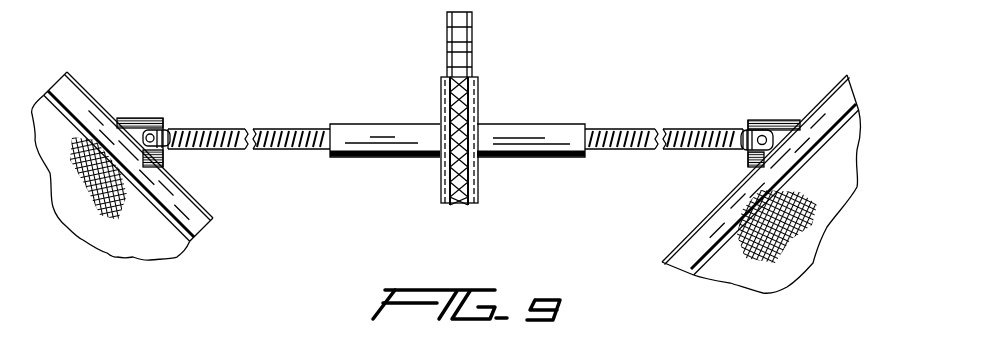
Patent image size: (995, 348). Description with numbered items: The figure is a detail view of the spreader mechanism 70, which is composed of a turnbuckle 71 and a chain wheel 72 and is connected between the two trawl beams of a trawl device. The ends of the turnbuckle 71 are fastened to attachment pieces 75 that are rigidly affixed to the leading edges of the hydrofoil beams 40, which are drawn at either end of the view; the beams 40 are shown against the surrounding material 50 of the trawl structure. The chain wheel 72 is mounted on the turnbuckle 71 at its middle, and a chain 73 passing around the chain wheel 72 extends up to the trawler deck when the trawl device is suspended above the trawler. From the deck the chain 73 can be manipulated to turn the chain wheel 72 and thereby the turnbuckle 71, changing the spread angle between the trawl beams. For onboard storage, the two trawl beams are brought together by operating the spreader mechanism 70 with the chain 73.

The hydrofoil beam 40 is at (78, 108).
The wall 50 is at (143, 240).
The spreader mechanism 70 is at (378, 102).
The turnbuckle 71 is at (532, 125).
The chain wheel 72 is at (478, 88).
The chain 73 is at (471, 35).
The attachment piece 75 is at (140, 122).